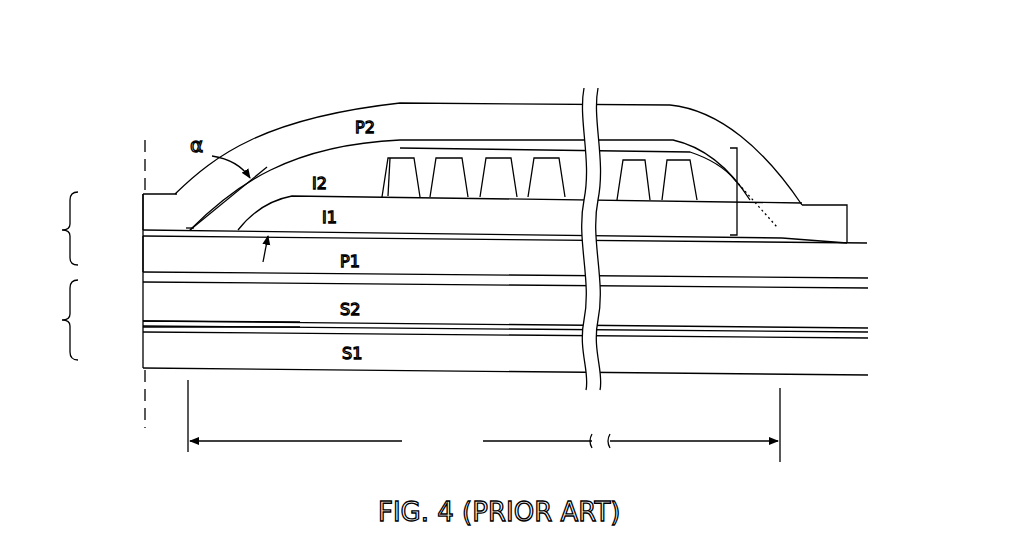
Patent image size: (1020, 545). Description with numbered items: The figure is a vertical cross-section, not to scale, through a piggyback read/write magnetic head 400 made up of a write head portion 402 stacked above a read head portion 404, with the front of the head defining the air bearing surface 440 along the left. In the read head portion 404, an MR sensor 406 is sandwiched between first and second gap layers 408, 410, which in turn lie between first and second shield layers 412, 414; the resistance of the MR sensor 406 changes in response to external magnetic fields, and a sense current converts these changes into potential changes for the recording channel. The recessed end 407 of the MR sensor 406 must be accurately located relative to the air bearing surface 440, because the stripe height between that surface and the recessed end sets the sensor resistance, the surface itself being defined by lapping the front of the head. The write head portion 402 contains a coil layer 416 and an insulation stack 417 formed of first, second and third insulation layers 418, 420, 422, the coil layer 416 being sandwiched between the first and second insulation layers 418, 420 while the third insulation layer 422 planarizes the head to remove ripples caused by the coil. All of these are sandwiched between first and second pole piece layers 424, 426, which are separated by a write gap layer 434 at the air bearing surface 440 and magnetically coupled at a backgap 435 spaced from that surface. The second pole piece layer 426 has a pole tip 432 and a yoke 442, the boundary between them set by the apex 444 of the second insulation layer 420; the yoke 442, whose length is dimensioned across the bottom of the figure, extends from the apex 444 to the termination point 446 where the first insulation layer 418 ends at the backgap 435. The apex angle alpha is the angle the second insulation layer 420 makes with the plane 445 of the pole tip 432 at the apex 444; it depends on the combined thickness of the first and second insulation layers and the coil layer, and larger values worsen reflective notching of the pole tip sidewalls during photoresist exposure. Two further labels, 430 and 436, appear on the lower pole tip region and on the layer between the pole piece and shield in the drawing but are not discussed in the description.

The piggyback read/write head 400 is at (665, 100).
The write head portion 402 is at (60, 230).
The read head portion 404 is at (60, 320).
The MR sensor 406 is at (143, 327).
The recessed end of the MR sensor 407 is at (188, 325).
The first gap layer 408 is at (505, 341).
The second gap layer 410 is at (503, 326).
The first shield layer 412 is at (427, 364).
The second shield layer 414 is at (427, 320).
The coil layer 416 is at (450, 194).
The insulation stack 417 is at (745, 188).
The first insulation layer 418 is at (416, 228).
The second insulation layer 420 is at (376, 192).
The third insulation layer 422 is at (472, 142).
The first pole piece layer 424 is at (427, 270).
The second pole piece layer 426 is at (446, 132).
The first pole tip 430 is at (143, 254).
The pole tip 432 is at (143, 211).
The write gap layer 434 is at (143, 233).
The backgap 435 is at (817, 204).
The separation layer 436 is at (143, 277).
The ABS 440 is at (141, 160).
The yoke 442 is at (484, 429).
The apex of the second insulation layer 444 is at (190, 224).
The plane of the pole tip 445 is at (170, 234).
The termination point 446 is at (782, 239).